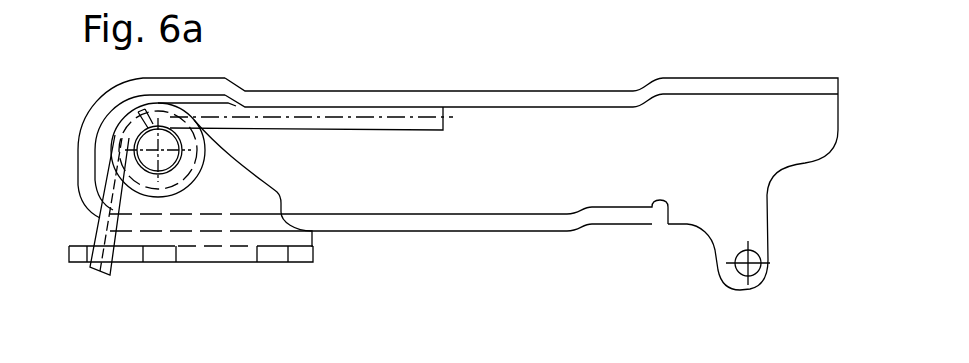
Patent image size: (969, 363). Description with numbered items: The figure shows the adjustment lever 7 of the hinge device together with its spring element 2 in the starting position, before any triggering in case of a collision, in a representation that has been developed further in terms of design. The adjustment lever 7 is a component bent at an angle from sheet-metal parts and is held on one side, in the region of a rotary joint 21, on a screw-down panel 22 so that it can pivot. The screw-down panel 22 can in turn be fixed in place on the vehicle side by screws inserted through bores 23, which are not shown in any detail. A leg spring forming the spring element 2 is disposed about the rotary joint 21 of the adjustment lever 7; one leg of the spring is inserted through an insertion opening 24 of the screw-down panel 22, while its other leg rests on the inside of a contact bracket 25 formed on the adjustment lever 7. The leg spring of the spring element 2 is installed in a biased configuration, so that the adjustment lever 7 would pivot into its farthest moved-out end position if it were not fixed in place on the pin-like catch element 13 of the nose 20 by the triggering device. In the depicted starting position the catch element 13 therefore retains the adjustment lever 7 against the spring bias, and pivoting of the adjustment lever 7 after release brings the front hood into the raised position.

The spring element 2 is at (328, 120).
The adjustment lever 7 is at (508, 182).
The catch element 13 is at (752, 268).
The nose 20 is at (743, 233).
The rotary joint 21 is at (150, 143).
The screw-down panel 22 is at (228, 200).
The bores 23 is at (160, 253).
The insertion opening 24 is at (93, 250).
The contact bracket 25 is at (468, 166).